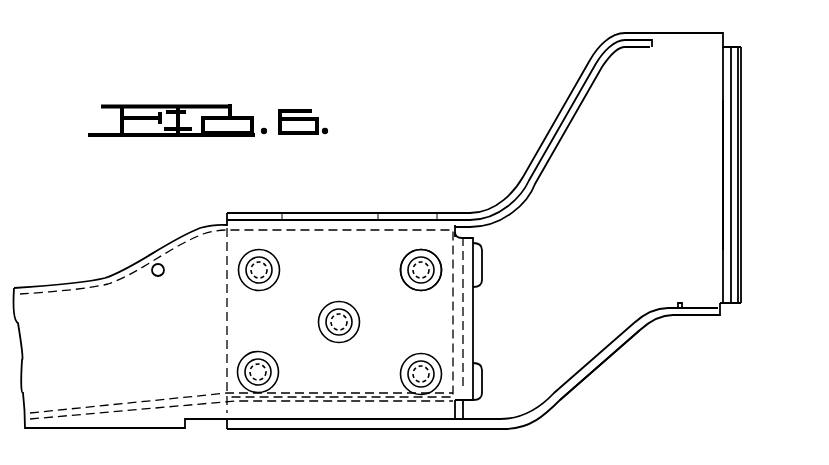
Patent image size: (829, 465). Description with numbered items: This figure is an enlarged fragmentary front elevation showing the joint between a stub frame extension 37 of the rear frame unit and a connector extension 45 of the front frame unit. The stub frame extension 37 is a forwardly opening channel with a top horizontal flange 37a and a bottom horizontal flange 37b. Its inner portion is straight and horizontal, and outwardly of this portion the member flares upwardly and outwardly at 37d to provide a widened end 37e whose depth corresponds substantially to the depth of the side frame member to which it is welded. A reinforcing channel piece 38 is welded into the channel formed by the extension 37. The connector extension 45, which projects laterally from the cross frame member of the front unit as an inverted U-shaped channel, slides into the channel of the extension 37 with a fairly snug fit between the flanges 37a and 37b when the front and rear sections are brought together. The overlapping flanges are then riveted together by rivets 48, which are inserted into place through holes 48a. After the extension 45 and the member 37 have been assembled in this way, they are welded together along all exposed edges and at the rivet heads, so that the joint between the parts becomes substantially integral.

The stub frame extension 37 is at (330, 210).
The top horizontal flange 37a is at (395, 213).
The bottom horizontal flange 37b is at (360, 430).
The flared portion 37d is at (597, 347).
The widened end 37e is at (700, 157).
The reinforcing channel piece 38 is at (497, 415).
The connector extension 45 is at (125, 257).
The rivets 48 is at (320, 317).
The holes 48a is at (435, 283).